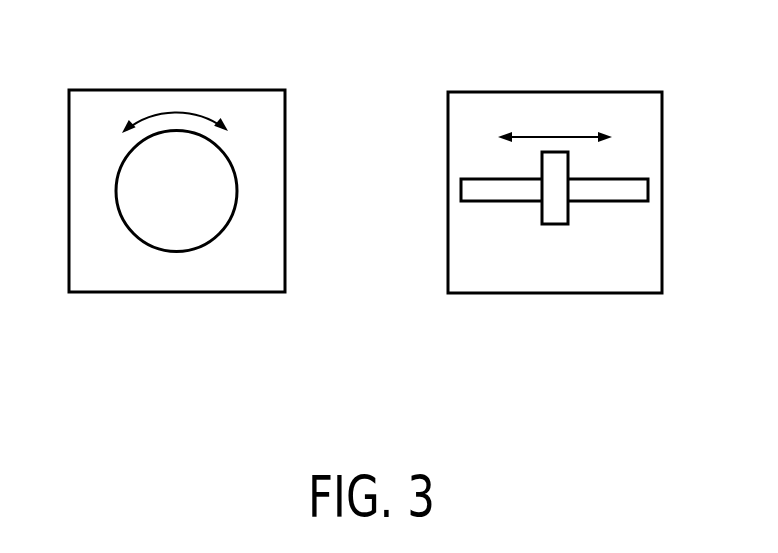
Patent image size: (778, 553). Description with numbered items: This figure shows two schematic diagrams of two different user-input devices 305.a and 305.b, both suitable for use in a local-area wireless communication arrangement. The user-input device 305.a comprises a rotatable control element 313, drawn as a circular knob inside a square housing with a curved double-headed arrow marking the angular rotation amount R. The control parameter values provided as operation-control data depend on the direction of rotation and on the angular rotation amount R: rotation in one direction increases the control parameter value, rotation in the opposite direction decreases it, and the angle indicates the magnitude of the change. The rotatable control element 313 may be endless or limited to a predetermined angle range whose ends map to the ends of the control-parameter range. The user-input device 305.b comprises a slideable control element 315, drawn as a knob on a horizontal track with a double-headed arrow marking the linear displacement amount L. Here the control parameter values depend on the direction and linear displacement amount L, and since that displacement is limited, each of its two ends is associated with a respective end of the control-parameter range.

The user-input device 305.a is at (118, 90).
The user-input device 305.b is at (502, 92).
The rotatable control element 313 is at (170, 252).
The slideable control element 315 is at (558, 224).